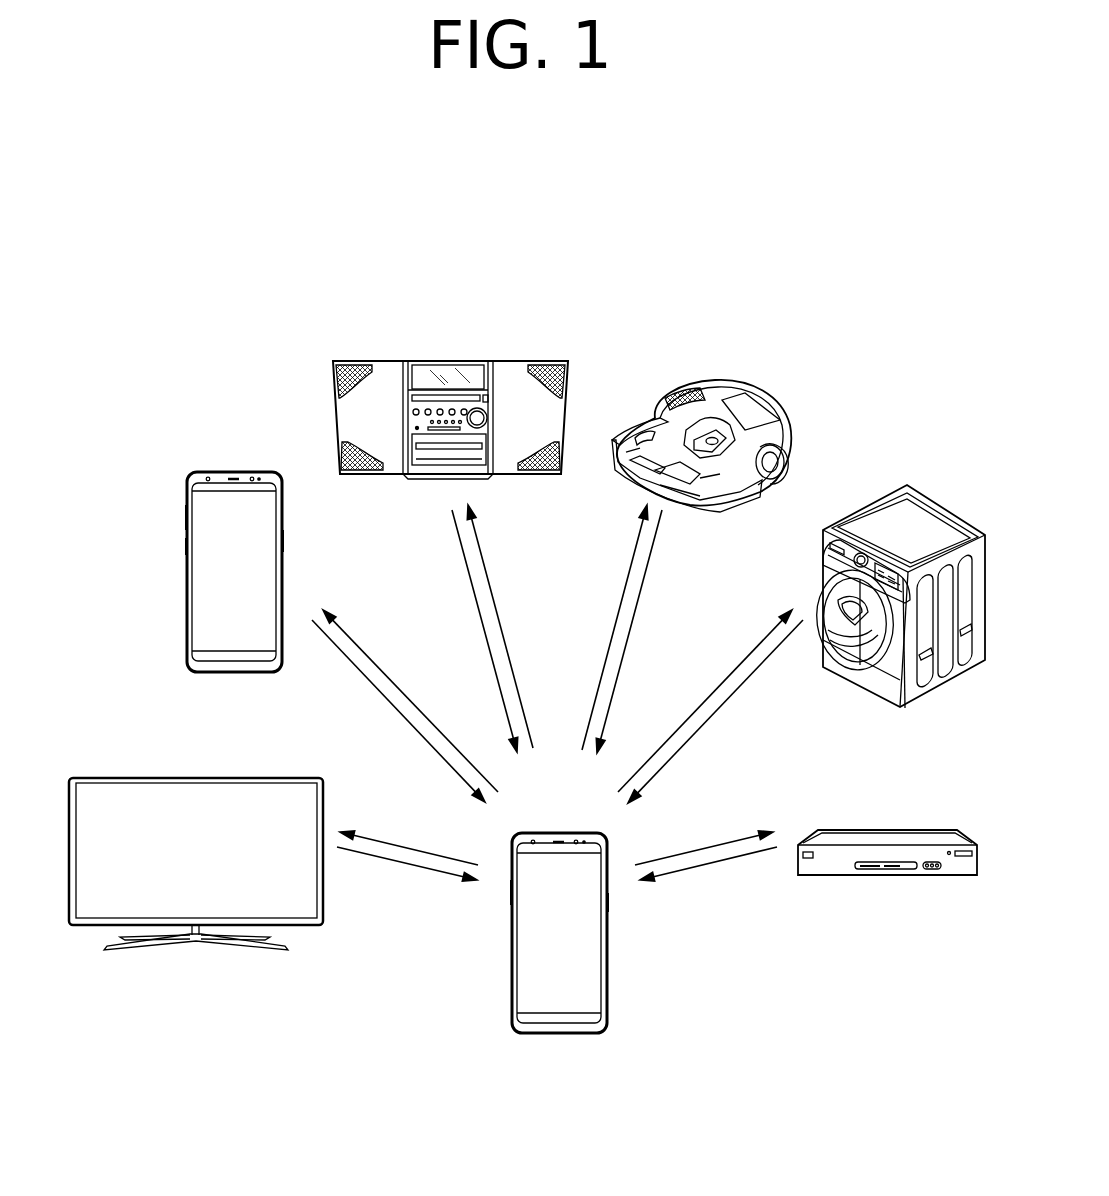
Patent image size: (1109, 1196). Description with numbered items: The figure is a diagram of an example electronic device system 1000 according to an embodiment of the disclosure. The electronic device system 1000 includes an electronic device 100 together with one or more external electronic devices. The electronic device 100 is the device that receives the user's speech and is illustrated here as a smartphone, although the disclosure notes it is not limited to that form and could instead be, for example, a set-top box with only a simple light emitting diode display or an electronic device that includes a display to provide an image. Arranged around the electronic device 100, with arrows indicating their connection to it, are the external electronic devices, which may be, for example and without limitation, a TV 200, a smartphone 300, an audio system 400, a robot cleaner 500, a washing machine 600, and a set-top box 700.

The electronic device system 1000 is at (587, 187).
The electronic device 100 is at (607, 955).
The TV 200 is at (194, 776).
The smartphone 300 is at (222, 470).
The audio system 400 is at (447, 358).
The robot cleaner 500 is at (715, 380).
The washing machine 600 is at (928, 502).
The set-top box 700 is at (930, 830).